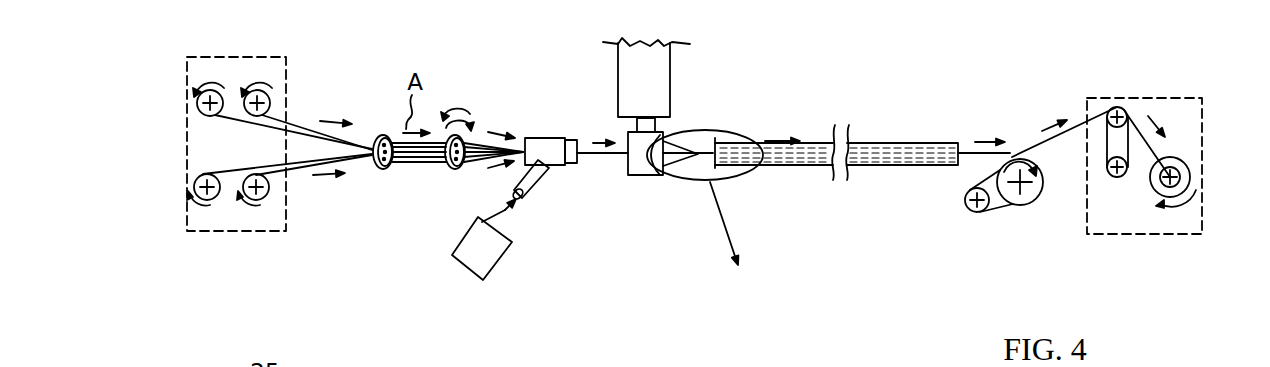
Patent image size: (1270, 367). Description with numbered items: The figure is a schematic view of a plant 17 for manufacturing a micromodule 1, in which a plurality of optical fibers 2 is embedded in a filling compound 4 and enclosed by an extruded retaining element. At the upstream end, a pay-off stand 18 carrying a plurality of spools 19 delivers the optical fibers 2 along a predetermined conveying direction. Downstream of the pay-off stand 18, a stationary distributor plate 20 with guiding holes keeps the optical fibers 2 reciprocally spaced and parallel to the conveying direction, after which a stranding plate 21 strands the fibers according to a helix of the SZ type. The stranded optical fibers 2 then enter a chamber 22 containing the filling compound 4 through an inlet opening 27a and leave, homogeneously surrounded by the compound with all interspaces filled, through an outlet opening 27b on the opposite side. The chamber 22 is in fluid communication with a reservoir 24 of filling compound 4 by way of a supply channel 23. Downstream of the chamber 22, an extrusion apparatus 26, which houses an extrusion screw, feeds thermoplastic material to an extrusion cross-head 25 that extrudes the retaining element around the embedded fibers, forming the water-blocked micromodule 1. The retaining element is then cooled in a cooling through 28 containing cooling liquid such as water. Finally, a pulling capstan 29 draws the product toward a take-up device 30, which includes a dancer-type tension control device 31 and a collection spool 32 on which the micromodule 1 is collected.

The micromodule 1 is at (703, 178).
The optical fibers 2 is at (299, 171).
The filling compound 4 is at (565, 140).
The plant 17 is at (645, 292).
The pay-off stand 18 is at (245, 233).
The spools 19 is at (200, 183).
The stationary distributor plate 20 is at (381, 172).
The stranding plate 21 is at (452, 171).
The chamber 22 is at (540, 138).
The channel 23 is at (533, 192).
The reservoir 24 is at (497, 268).
The extrusion cross-head 25 is at (643, 178).
The extrusion apparatus 26 is at (670, 92).
The inlet opening 27a is at (522, 138).
The outlet opening 27b is at (590, 157).
The cooling through 28 is at (812, 166).
The pulling capstan 29 is at (1040, 207).
The take-up device 30 is at (1145, 236).
The tension control device 31 is at (1125, 107).
The collection spool 32 is at (1192, 176).